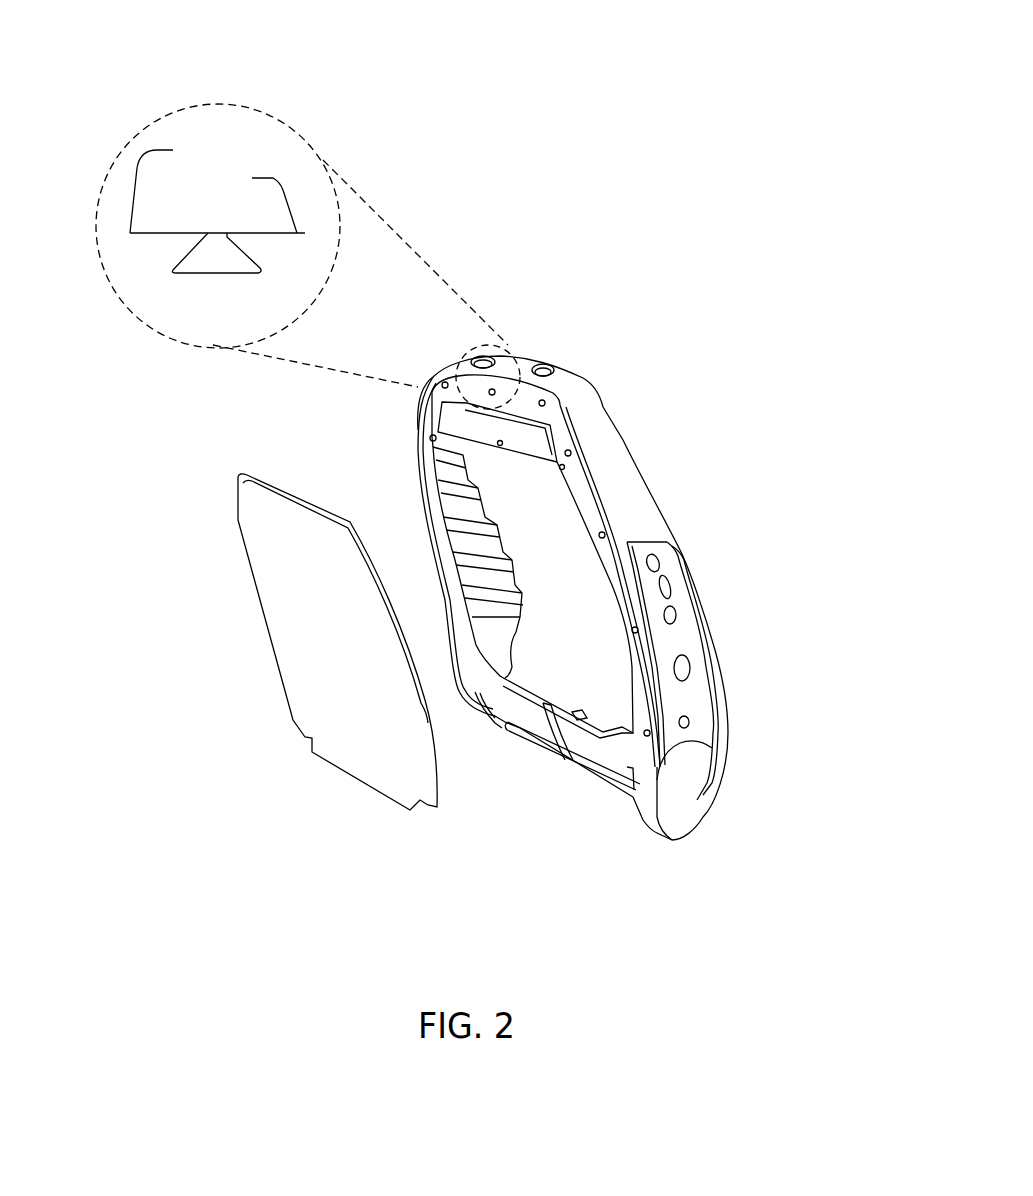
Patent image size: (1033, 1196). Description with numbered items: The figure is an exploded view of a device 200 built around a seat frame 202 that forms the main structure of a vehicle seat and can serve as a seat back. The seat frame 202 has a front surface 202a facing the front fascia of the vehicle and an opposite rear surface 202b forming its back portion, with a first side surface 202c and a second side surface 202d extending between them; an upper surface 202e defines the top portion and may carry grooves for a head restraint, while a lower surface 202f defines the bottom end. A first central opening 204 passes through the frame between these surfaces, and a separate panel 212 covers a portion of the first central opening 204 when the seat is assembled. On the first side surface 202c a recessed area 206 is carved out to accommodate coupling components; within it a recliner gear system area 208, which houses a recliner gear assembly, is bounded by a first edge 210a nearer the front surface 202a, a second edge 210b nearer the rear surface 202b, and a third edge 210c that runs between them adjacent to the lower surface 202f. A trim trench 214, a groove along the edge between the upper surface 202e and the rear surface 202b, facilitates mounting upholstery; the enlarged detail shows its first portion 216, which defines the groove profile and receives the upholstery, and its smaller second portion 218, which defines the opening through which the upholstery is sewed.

The device 200 is at (480, 54).
The seat frame 202 is at (535, 236).
The front surface 202a is at (623, 440).
The rear surface 202b is at (572, 733).
The first side surface 202c is at (617, 497).
The second side surface 202d is at (418, 442).
The upper surface 202e is at (528, 365).
The lower surface 202f is at (588, 776).
The first central opening 204 is at (574, 590).
The recessed area 206 is at (733, 805).
The recliner gear system area 208 is at (673, 605).
The first edge 210a is at (708, 628).
The second edge 210b is at (658, 647).
The third edge 210c is at (680, 743).
The panel 212 is at (297, 490).
The trim trench 214 is at (565, 422).
The first portion 216 is at (210, 274).
The second portion 218 is at (222, 233).